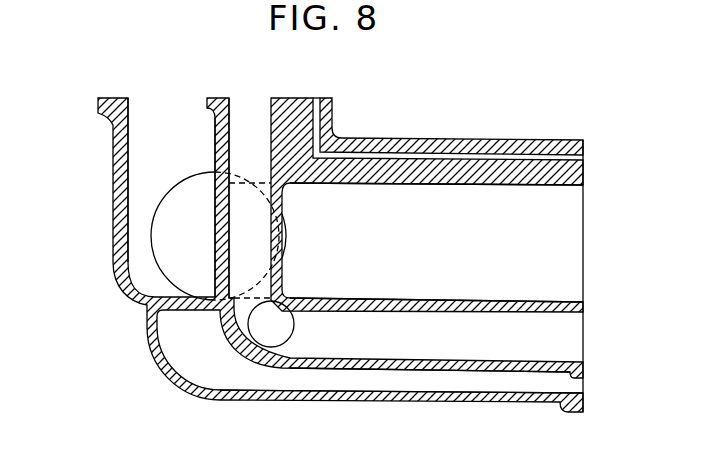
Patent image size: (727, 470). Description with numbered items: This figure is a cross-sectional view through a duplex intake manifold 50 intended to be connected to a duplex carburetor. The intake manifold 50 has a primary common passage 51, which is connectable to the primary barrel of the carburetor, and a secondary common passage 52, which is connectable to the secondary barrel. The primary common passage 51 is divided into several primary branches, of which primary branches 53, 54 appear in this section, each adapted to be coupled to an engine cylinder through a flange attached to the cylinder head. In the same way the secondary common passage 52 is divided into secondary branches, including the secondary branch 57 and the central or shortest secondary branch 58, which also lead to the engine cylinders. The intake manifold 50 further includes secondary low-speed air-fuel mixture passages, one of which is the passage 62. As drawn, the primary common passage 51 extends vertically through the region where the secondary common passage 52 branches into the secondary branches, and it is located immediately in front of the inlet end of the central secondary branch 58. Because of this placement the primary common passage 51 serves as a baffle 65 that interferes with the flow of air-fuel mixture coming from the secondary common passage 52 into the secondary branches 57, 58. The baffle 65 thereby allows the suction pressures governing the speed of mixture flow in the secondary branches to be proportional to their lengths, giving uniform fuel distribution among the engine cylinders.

The duplex intake manifold 50 is at (113, 275).
The primary common passage 51 is at (253, 128).
The secondary common passage 52 is at (142, 225).
The primary branch 53 is at (262, 328).
The primary branch 54 is at (570, 332).
The secondary branch 57 is at (202, 193).
The central secondary branch 58 is at (498, 205).
The secondary low-speed air-fuel mixture passage 62 is at (315, 128).
The baffle 65 is at (210, 235).